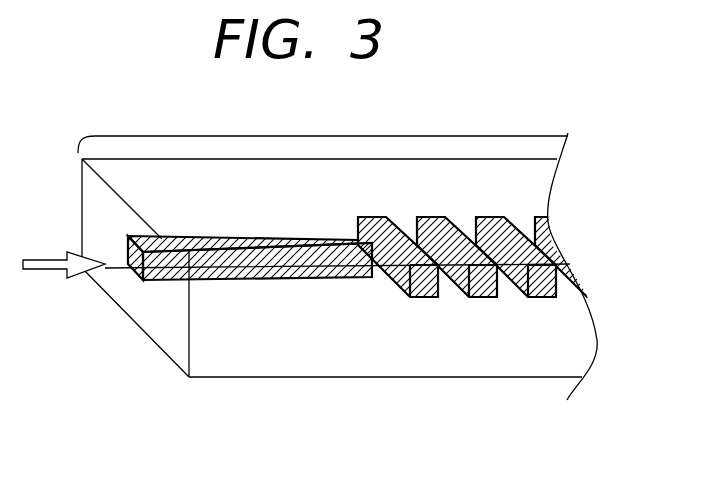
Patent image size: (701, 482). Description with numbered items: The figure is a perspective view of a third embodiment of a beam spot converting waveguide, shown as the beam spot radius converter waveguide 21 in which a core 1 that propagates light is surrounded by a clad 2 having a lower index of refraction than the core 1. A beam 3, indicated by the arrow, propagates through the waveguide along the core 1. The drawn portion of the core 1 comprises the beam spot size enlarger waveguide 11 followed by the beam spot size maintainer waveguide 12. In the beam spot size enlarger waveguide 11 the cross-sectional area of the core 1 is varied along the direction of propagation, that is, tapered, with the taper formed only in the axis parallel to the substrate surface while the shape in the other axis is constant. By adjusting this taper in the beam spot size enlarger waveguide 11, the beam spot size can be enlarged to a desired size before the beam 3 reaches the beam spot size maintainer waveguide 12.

The core 1 is at (354, 300).
The clad 2 is at (290, 366).
The beam 3 is at (48, 268).
The beam spot size enlarger waveguide 11 is at (107, 208).
The beam spot size maintainer waveguide 12 is at (355, 208).
The beam spot radius converter waveguide 21 is at (405, 136).